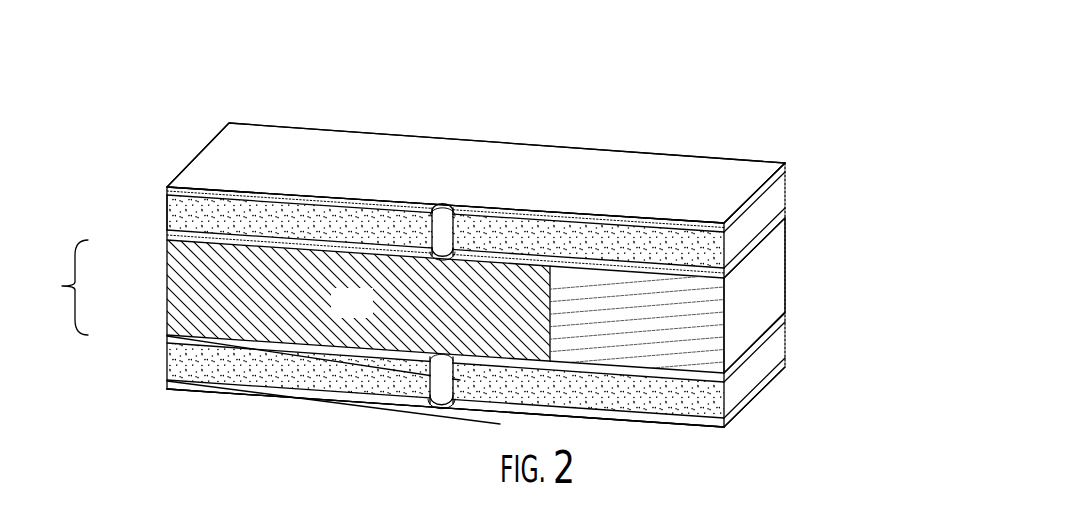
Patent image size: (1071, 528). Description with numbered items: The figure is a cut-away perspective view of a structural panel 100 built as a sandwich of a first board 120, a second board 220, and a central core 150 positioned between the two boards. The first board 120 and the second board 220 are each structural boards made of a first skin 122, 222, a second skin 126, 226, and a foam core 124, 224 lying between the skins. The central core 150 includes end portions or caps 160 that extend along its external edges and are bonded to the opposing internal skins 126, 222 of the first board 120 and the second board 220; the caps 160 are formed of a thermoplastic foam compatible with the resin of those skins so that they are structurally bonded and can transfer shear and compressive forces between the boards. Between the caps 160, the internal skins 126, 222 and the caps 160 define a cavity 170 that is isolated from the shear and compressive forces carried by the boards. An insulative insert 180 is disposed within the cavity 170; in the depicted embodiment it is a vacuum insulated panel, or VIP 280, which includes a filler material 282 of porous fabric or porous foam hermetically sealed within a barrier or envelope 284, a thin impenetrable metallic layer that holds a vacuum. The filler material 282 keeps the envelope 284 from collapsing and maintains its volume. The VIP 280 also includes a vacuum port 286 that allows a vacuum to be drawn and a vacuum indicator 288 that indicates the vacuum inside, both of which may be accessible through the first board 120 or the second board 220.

The panel 100 is at (863, 91).
The first board 120 is at (718, 156).
The first skin 122 is at (786, 165).
The core 124 is at (783, 188).
The second skin 126 is at (784, 213).
The central core 150 is at (62, 286).
The caps 160 is at (774, 265).
The cavity 170 is at (166, 338).
The insulative insert 180 is at (167, 290).
The second board 220 is at (673, 425).
The first skin 222 is at (784, 318).
The core 224 is at (774, 345).
The second skin 226 is at (744, 404).
The VIP panel 280 is at (167, 256).
The filler material 282 is at (368, 315).
The envelope 284 is at (188, 230).
The vacuum port 286 is at (446, 357).
The vacuum indicator 288 is at (447, 242).